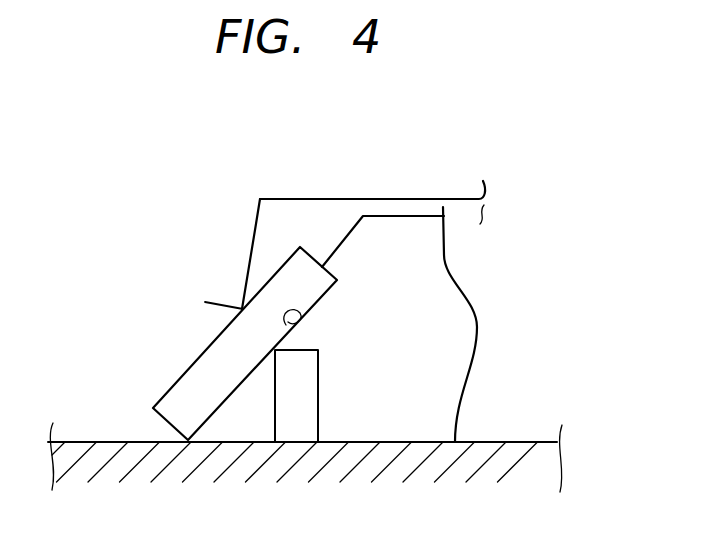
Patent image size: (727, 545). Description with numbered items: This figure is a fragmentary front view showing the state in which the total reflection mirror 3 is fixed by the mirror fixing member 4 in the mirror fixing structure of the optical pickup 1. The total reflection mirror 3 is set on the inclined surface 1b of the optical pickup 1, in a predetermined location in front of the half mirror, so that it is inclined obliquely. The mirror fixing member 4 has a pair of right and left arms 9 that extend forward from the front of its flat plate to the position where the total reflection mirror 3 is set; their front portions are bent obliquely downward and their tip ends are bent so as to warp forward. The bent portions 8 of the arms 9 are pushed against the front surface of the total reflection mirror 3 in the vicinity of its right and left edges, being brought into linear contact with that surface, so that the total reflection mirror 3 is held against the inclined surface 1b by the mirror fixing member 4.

The optical pickup 1 is at (492, 318).
The inclined surface 1b is at (297, 321).
The total reflection mirror 3 is at (188, 382).
The mirror fixing member 4 is at (426, 172).
The bent portions 8 is at (240, 310).
The arms 9 is at (328, 199).